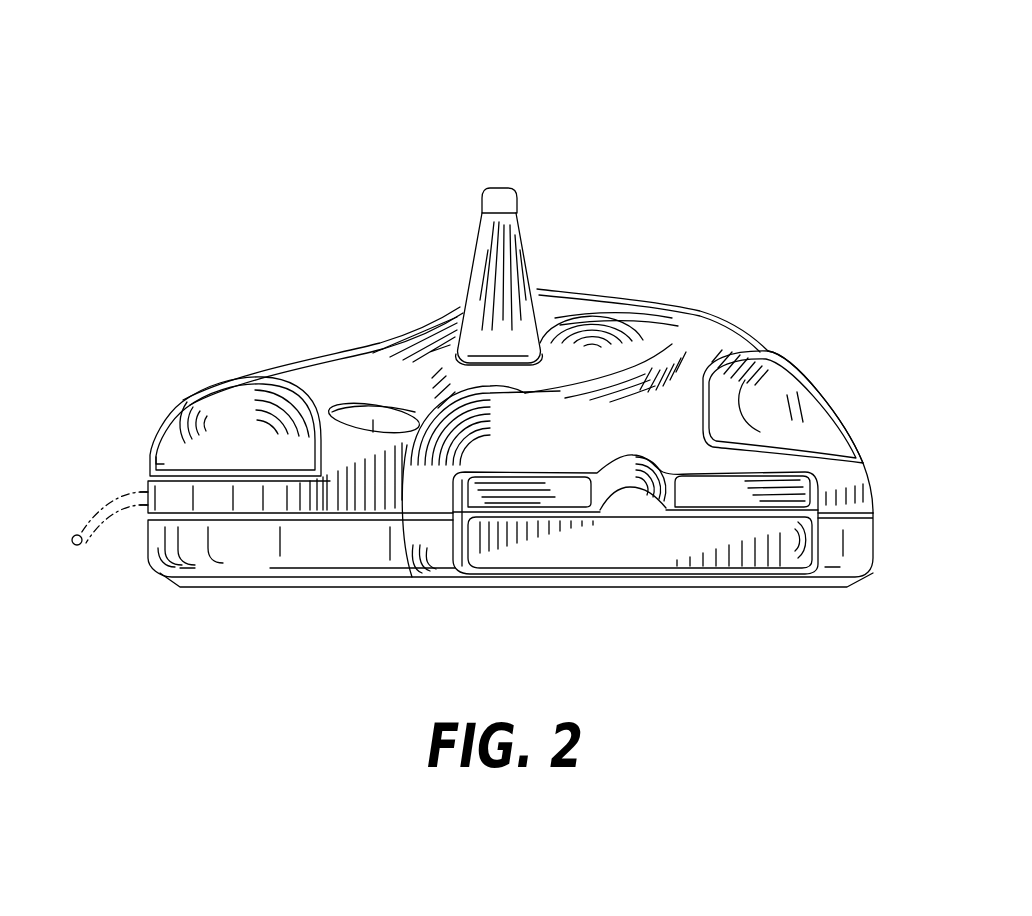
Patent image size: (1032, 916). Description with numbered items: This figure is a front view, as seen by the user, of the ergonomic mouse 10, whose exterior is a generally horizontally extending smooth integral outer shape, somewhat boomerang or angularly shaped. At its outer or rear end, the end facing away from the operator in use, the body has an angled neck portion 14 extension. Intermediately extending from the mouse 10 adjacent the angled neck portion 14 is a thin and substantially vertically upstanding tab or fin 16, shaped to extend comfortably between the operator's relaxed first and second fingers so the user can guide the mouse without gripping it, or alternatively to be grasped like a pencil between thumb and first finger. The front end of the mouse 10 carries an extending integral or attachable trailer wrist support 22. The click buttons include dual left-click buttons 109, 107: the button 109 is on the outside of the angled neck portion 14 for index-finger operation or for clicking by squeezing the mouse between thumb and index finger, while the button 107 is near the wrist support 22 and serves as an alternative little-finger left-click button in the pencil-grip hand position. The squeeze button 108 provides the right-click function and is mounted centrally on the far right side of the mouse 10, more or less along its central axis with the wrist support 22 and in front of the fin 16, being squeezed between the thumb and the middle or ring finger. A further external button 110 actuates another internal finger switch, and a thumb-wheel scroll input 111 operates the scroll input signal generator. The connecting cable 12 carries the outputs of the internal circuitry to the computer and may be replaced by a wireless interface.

The mouse 10 is at (692, 119).
The cable 12 is at (103, 503).
The angled neck portion 14 is at (400, 363).
The fin 16 is at (517, 250).
The wrist support 22 is at (670, 483).
The button 107 is at (817, 405).
The squeeze button 108 is at (700, 308).
The button 109 is at (157, 427).
The button 110 is at (225, 417).
The thumb-wheel scroll input 111 is at (367, 423).